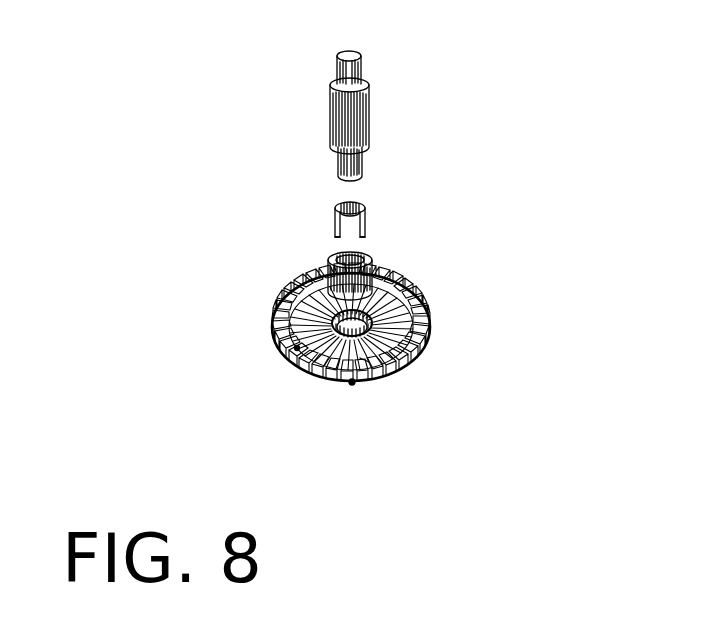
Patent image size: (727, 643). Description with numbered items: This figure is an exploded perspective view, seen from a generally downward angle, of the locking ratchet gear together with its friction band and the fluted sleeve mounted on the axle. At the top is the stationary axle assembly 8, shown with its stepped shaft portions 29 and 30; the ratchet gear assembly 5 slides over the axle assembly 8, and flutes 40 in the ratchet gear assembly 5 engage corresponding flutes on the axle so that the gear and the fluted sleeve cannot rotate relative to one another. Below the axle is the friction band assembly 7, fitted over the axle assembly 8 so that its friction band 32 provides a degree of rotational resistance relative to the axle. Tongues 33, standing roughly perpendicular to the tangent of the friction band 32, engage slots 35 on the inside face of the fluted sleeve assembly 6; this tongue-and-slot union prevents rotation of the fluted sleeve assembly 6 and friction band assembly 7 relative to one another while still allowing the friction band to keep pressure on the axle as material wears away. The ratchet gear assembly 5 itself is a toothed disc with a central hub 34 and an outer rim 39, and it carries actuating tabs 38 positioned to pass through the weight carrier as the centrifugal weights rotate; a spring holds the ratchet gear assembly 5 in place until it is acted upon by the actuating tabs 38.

The ratchet gear assembly 5 is at (338, 378).
The fluted sleeve assembly 6 is at (375, 251).
The friction band assembly 7 is at (372, 218).
The axle assembly 8 is at (373, 115).
The shaft journal pins 29 is at (340, 75).
The shaft body 30 is at (333, 124).
The friction band 32 is at (336, 217).
The tongues 33 is at (333, 235).
The gear hub 34 is at (330, 280).
The slots 35 is at (330, 262).
The actuating tabs 38 is at (352, 382).
The gear rim 39 is at (365, 360).
The flutes 40 is at (297, 348).